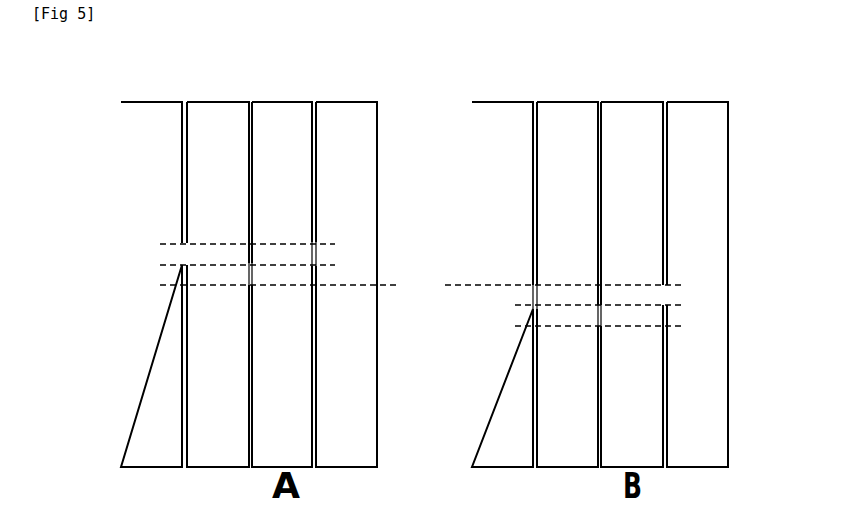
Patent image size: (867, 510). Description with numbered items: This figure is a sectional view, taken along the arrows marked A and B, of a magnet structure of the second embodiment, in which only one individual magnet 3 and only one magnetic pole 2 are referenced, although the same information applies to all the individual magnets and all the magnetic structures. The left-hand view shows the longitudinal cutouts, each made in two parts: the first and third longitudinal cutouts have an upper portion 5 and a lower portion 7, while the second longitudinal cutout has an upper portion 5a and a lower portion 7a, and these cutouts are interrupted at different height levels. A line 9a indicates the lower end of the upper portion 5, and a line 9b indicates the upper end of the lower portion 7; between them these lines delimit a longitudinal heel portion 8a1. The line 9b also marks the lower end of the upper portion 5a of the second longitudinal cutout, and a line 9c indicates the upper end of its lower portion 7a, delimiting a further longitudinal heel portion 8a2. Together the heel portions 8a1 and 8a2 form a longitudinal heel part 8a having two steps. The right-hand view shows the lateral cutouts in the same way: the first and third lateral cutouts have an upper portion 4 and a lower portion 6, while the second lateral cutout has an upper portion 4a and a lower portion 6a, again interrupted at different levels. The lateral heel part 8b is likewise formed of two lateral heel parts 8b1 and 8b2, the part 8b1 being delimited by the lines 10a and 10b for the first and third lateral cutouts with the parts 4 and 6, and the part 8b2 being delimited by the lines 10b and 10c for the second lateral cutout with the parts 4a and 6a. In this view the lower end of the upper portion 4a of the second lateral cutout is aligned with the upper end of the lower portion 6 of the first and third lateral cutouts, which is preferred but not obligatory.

The magnetic pole 2 is at (108, 178).
The individual magnet 3 is at (147, 137).
The upper portion of the first and third lateral cutouts 4 is at (533, 150).
The upper portion of the second lateral cutout 4a is at (598, 150).
The upper portion of the first and third longitudinal cutouts 5 is at (186, 142).
The upper portion of the second longitudinal cutout 5a is at (250, 142).
The lower portion of the first and third lateral cutouts 6 is at (533, 432).
The lower portion of the second lateral cutout 6a is at (597, 433).
The lower portion of the first and third longitudinal cutouts 7 is at (183, 428).
The lower portion of the second longitudinal cutout 7a is at (250, 430).
The longitudinal heel part 8a is at (330, 255).
The longitudinal heel portion 8a1 is at (313, 254).
The longitudinal heel portion 8a2 is at (252, 276).
The lateral heel part 8b is at (515, 293).
The lateral heel part 8b1 is at (537, 293).
The lateral heel part 8b2 is at (600, 316).
The line indicating the lower end of the upper portion of the first and third longit 9a is at (203, 243).
The line indicating the upper end of the lower portion of the first and third longit 9b is at (198, 265).
The line indicating the upper end of the lower portion of the second longitudinal cu 9c is at (200, 285).
The line delimiting the lateral heel part of the first and third lateral cutouts 10a is at (675, 283).
The line delimiting the lateral heel parts 10b is at (677, 302).
The line delimiting the lateral heel part of the second lateral cutout 10c is at (675, 325).